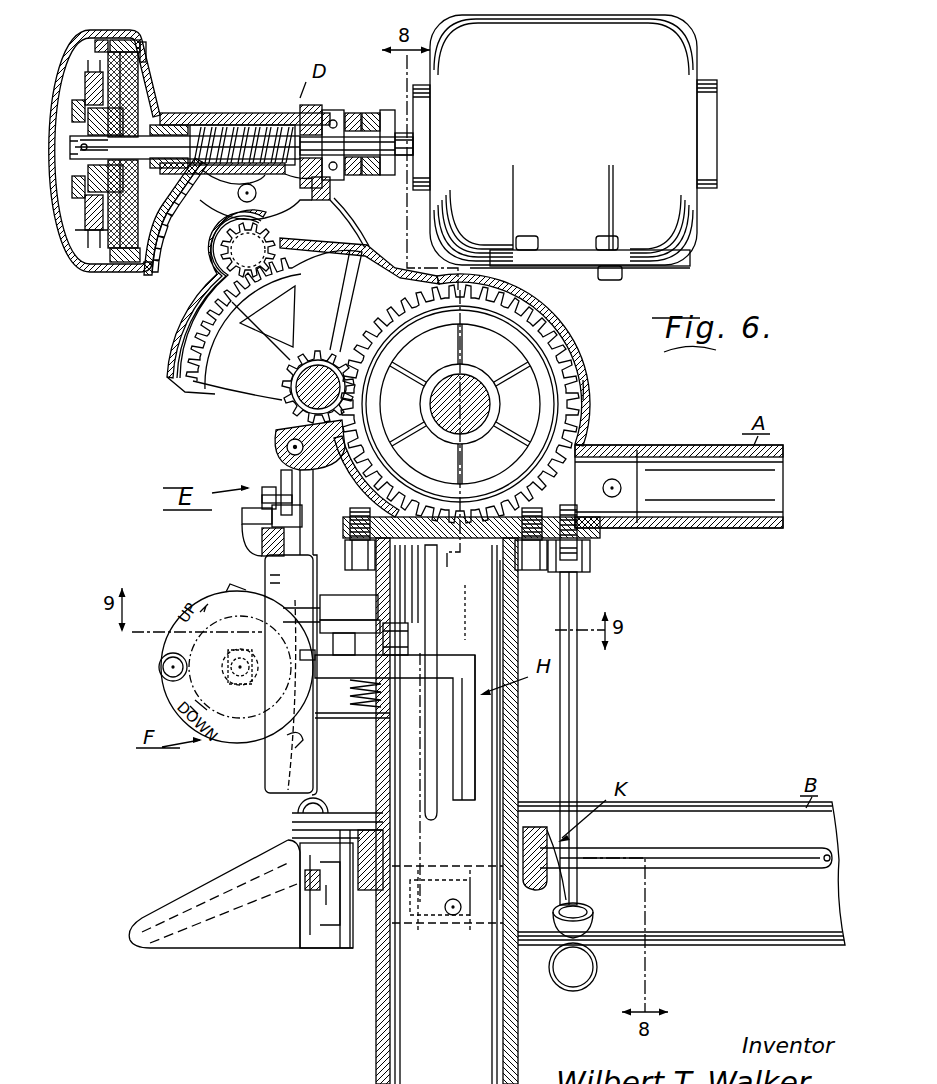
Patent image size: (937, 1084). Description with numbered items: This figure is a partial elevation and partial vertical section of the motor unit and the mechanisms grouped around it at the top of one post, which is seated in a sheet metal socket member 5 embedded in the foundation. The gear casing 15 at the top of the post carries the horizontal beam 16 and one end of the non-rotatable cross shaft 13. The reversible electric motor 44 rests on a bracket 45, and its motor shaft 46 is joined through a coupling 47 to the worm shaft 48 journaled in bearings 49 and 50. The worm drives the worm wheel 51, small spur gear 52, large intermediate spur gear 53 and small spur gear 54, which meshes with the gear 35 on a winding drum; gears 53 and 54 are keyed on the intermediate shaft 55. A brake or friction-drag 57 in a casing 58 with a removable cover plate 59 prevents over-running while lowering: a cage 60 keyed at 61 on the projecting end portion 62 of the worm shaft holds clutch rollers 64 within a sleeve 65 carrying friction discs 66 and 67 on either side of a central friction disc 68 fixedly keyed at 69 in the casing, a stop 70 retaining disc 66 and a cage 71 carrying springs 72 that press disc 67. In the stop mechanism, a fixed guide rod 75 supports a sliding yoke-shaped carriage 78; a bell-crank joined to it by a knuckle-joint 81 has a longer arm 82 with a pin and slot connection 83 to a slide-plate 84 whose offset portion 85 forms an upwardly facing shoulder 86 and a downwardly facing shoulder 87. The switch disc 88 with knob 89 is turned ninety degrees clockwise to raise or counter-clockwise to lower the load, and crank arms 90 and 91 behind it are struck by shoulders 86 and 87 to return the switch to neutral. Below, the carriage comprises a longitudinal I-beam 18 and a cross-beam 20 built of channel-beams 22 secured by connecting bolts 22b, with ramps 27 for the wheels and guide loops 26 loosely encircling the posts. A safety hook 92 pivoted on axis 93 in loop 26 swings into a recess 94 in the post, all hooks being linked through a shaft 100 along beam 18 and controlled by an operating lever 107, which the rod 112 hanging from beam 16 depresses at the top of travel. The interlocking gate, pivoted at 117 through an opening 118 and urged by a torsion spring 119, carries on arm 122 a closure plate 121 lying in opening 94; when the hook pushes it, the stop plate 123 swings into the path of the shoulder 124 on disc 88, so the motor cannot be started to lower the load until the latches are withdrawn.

The socket member 5 is at (376, 1078).
The non-rotatable shaft 13 is at (470, 378).
The gear casing 15 is at (570, 350).
The horizontal beam 16 is at (783, 522).
The longitudinal I-beam 18 is at (838, 948).
The cross-beam 20 is at (298, 958).
The channel-beam 22 is at (352, 950).
The connecting bolt 22b is at (318, 870).
The metal loop 26 is at (372, 828).
The ramp 27 is at (225, 884).
The gear 35 is at (585, 378).
The reversible electric motor 44 is at (690, 62).
The bracket 45 is at (660, 270).
The motor shaft 46 is at (410, 138).
The coupling 47 is at (362, 112).
The worm shaft 48 is at (255, 128).
The bearing 49 is at (318, 110).
The bearing 50 is at (192, 116).
The worm wheel 51 is at (340, 188).
The small spur gear 52 is at (215, 272).
The large intermediate spur gear 53 is at (170, 360).
The small spur gear 54 is at (290, 412).
The intermediate shaft 55 is at (300, 396).
The brake or friction-drag 57 is at (150, 70).
The casing 58 is at (150, 100).
The removable cover plate 59 is at (105, 262).
The cage 60 is at (80, 198).
The key 61 is at (80, 122).
The projecting end portion 62 is at (168, 112).
The clutch roller 64 is at (138, 70).
The sleeve 65 is at (170, 222).
The friction disc 66 is at (146, 46).
The friction disc 67 is at (95, 44).
The central friction disc 68 is at (140, 44).
The key 69 is at (142, 42).
The stop 70 is at (218, 249).
The cage 71 is at (85, 88).
The spring 72 is at (88, 110).
The fixed guide rod 75 is at (286, 448).
The yoke-shaped carriage 78 is at (281, 467).
The knuckle-joint 81 is at (262, 502).
The longer arm of bell-crank 82 is at (250, 518).
The pin and slot connection 83 is at (262, 540).
The slide-plate 84 is at (268, 790).
The offset portion 85 is at (270, 610).
The upwardly facing shoulder 86 is at (342, 614).
The downwardly facing shoulder 87 is at (280, 740).
The disc 88 is at (175, 702).
The handle or knob 89 is at (160, 668).
The offset crank arm 90 is at (238, 654).
The offset crank arm 91 is at (238, 686).
The hook 92 is at (518, 736).
The horizontal axis 93 is at (528, 812).
The recess 94 is at (475, 650).
The rotatable shaft 100 is at (800, 870).
The operating lever 107 is at (596, 964).
The rod or post 112 is at (578, 696).
The vertical pivot axis 117 is at (398, 633).
The opening 118 is at (440, 618).
The torsion spring 119 is at (356, 700).
The closure plate 121 is at (468, 720).
The arm 122 is at (436, 655).
The stop plate 123 is at (312, 656).
The shoulder 124 is at (328, 720).